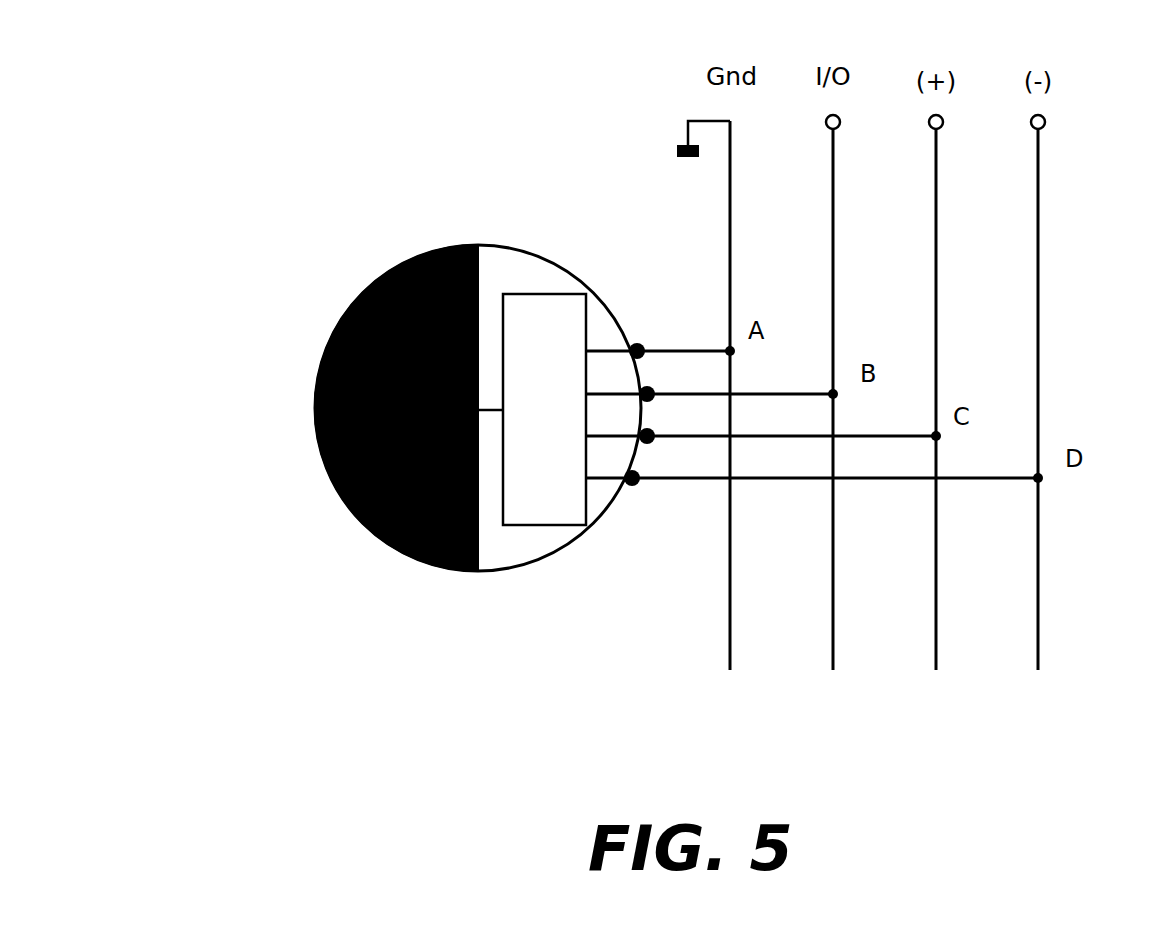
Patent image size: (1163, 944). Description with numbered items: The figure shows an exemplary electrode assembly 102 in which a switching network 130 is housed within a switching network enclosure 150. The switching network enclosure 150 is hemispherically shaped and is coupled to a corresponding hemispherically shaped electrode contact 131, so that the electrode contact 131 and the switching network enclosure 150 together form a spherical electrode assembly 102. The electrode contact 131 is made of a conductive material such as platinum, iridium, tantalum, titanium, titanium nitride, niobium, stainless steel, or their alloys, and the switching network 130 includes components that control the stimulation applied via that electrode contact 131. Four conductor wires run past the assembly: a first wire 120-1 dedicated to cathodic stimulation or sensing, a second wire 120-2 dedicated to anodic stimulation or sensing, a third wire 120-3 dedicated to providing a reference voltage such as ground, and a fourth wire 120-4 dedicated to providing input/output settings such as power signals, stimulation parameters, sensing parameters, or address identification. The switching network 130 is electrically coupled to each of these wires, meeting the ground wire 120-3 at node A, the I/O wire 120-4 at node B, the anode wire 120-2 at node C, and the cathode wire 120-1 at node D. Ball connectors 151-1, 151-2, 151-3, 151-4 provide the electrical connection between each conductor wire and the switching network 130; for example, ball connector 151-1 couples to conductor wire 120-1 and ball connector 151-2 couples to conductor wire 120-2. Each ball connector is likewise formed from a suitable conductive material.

The electrode assembly 102 is at (340, 225).
The switching network 130 is at (568, 422).
The electrode contact 131 is at (378, 540).
The switching network enclosure 150 is at (520, 566).
The ball connector 151-1 is at (639, 466).
The ball connector 151-2 is at (650, 429).
The ball connector 151-3 is at (642, 344).
The ball connector 151-4 is at (650, 387).
The first wire 120-1 is at (1039, 178).
The second wire 120-2 is at (937, 178).
The third wire 120-3 is at (731, 178).
The fourth wire 120-4 is at (834, 178).